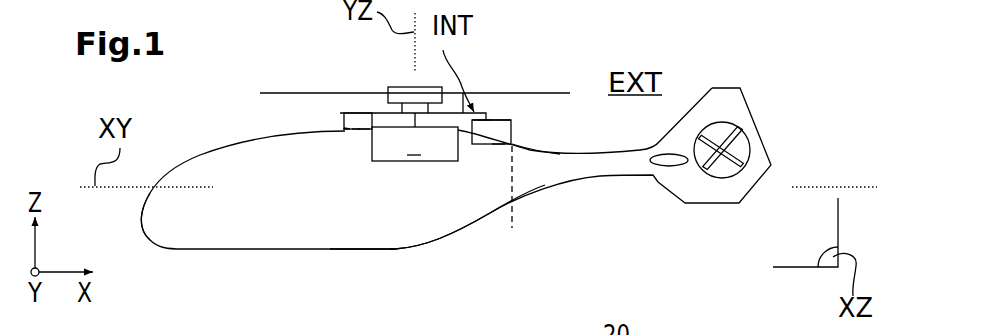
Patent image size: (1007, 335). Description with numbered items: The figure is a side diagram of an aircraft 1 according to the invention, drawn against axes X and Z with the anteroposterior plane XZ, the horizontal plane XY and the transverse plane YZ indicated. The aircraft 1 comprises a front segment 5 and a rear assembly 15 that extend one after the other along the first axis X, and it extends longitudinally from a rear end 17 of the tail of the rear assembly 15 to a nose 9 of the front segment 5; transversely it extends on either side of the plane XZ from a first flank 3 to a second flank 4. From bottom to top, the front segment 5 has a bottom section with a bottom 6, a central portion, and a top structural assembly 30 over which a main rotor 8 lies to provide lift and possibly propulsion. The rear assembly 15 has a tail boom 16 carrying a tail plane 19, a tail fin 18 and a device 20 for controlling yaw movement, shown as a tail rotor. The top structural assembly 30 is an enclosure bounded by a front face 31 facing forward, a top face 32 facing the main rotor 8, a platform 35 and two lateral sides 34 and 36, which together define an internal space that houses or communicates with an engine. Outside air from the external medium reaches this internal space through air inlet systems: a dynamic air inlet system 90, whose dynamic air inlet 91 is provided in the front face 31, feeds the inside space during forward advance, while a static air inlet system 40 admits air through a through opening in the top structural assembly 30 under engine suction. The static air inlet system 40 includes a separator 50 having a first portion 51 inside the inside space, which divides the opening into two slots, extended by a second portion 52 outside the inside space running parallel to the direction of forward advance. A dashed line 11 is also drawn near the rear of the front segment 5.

The aircraft 1 is at (217, 263).
The first flank 3 is at (415, 218).
The second flank 4 is at (513, 214).
The front segment 5 is at (287, 262).
The bottom 6 is at (365, 250).
The main rotor 8 is at (556, 91).
The nose 9 is at (140, 217).
The separation plane 11 is at (512, 200).
The rear assembly 15 is at (641, 190).
The tail boom 16 is at (512, 172).
The rear end 17 is at (771, 165).
The tail fin 18 is at (738, 107).
The tail plane 19 is at (677, 166).
The device for controlling the yaw movement 20 is at (718, 182).
The top structural assembly 30 is at (312, 124).
The front face 31 is at (343, 131).
The top face 32 is at (372, 113).
The lateral side 34 is at (362, 131).
The platform 35 is at (357, 131).
The lateral side 36 is at (466, 93).
The static air inlet system 40 is at (501, 113).
The separator 50 is at (518, 128).
The first portion 51 is at (483, 127).
The second portion 52 is at (498, 130).
The dynamic air inlet system 90 is at (342, 120).
The dynamic air inlet 91 is at (343, 128).